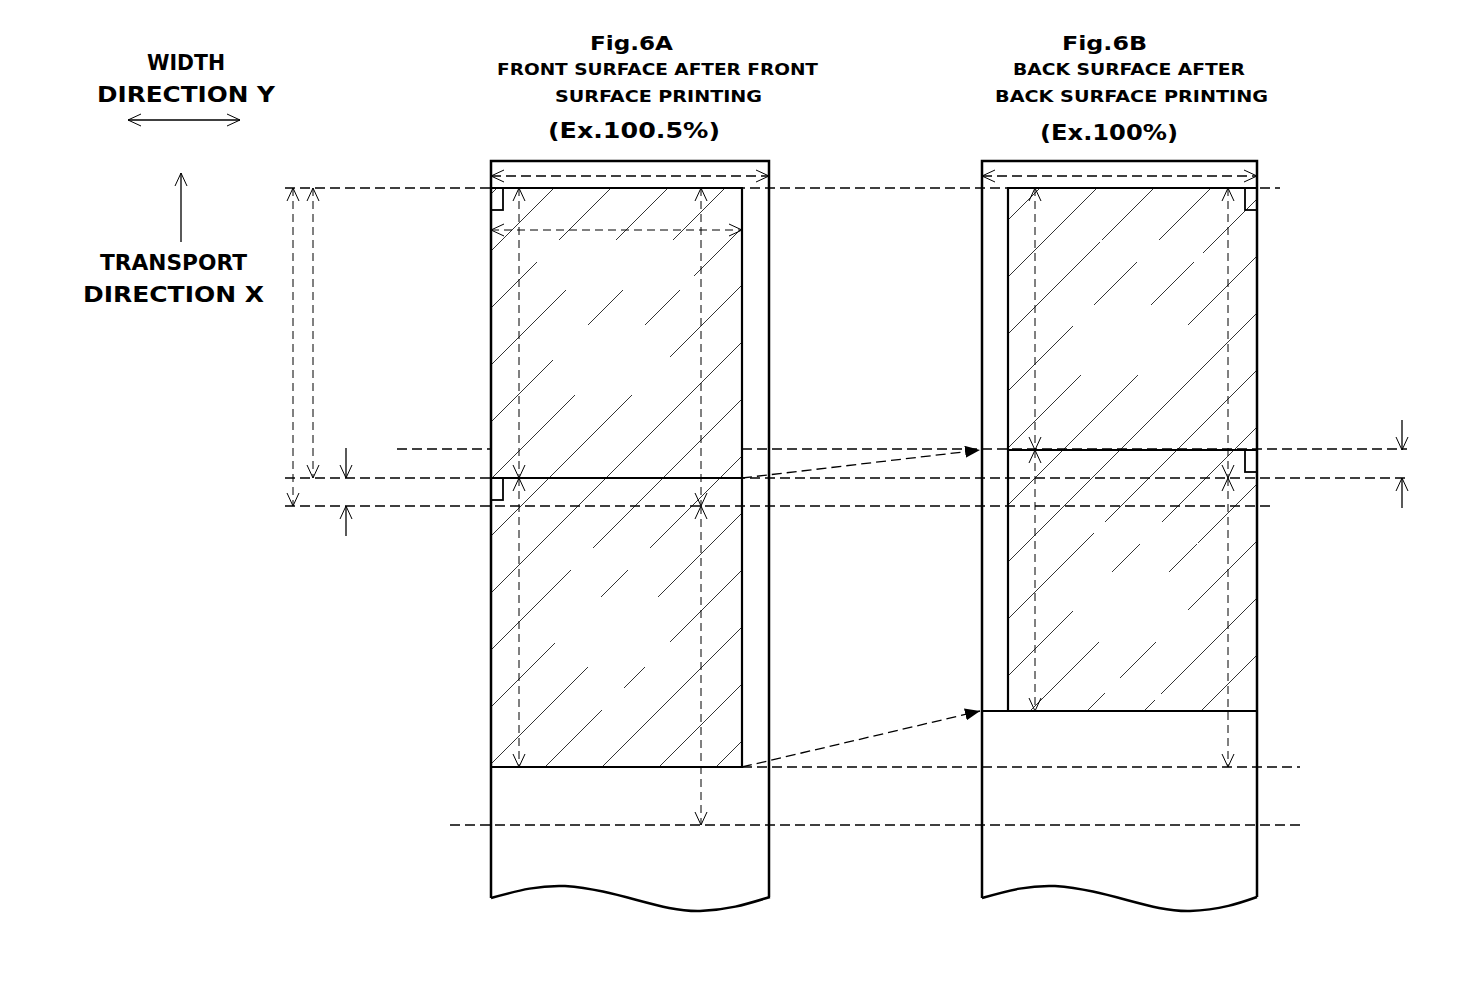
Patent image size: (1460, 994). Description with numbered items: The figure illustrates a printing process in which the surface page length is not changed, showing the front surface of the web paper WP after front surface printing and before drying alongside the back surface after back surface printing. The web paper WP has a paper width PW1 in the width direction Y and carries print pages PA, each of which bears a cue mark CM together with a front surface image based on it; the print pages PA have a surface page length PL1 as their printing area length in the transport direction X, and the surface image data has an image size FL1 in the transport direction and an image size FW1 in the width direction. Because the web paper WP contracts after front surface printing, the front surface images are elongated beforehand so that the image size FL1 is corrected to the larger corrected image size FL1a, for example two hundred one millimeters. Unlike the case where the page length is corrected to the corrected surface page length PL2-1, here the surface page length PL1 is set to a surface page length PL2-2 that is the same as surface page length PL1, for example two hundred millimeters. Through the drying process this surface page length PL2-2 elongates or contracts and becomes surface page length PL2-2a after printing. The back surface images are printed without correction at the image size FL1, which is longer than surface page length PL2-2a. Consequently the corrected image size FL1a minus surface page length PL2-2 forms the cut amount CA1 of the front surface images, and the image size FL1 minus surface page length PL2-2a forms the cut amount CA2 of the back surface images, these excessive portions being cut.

In FIG. 6A, the web paper WP is at (750, 160).
In FIG. 6B, the web paper WP is at (1240, 160).
In FIG. 6A, the paper width PW1 is at (511, 160).
In FIG. 6B, the paper width PW1 is at (1000, 160).
In FIG. 6A, the print pages PA is at (489, 403).
In FIG. 6B, the print pages PA is at (1270, 267).
In FIG. 6A, the cue mark CM is at (491, 198).
In FIG. 6B, the cue mark CM is at (1252, 200).
In FIG. 6A, the surface page length PL1 is at (313, 263).
In FIG. 6A, the corrected surface page length PL2-1 is at (293, 325).
In FIG. 6A, the surface page length PL2-2 is at (519, 262).
In FIG. 6A, the image size in the width direction FW1 is at (715, 235).
In FIG. 6A, the corrected image size FL1a is at (701, 400).
In FIG. 6A, the image size FL1 is at (700, 712).
In FIG. 6B, the image size FL1 is at (1228, 340).
In FIG. 6A, the cut amount of the front surface images CA1 is at (344, 476).
In FIG. 6B, the surface page length after printing PL2-2a is at (1035, 262).
In FIG. 6B, the cut amount of the back surface images CA2 is at (1403, 446).